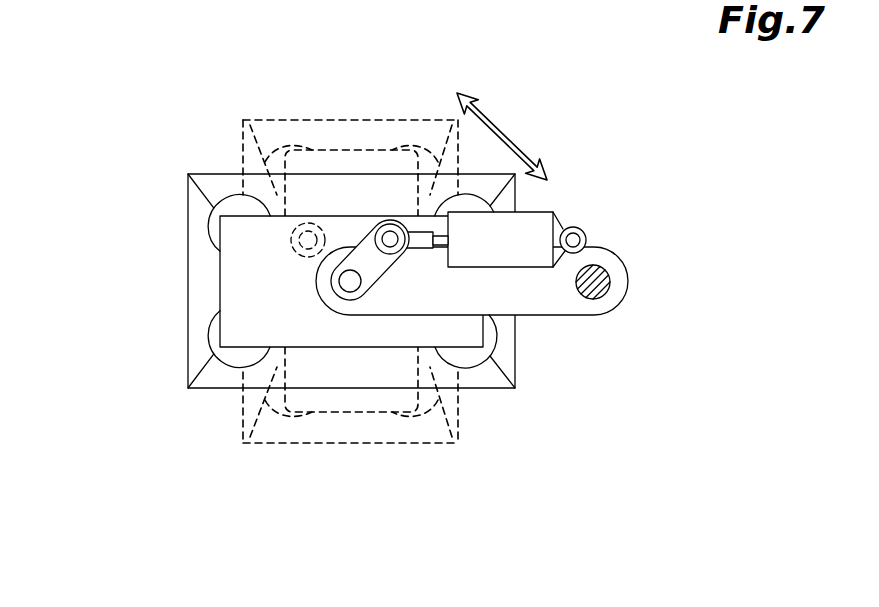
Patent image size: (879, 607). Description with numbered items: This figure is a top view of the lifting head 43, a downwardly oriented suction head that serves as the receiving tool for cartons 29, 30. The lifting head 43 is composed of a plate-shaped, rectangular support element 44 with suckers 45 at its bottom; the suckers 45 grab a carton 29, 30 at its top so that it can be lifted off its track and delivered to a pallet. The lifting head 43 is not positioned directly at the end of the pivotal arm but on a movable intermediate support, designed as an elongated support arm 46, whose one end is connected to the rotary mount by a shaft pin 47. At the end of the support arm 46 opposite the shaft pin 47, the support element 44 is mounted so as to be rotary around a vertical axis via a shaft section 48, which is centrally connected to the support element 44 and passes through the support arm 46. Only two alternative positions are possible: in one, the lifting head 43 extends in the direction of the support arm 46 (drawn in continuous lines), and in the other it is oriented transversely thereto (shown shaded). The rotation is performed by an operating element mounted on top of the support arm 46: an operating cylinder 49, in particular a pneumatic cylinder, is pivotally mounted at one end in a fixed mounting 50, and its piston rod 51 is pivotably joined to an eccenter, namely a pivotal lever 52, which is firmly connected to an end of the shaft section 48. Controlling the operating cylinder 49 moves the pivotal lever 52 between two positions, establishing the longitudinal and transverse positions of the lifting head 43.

The carton 29 is at (265, 221).
The carton 30 is at (117, 0).
The lifting head 43 is at (188, 400).
The support element 44 is at (243, 274).
The suckers 45 is at (224, 201).
The support arm 46 is at (325, 367).
The shaft pin 47 is at (612, 271).
The shaft section 48 is at (359, 245).
The operating cylinder 49 is at (538, 228).
The fixed mounting 50 is at (585, 236).
The piston rod 51 is at (473, 357).
The pivotal lever 52 is at (292, 260).